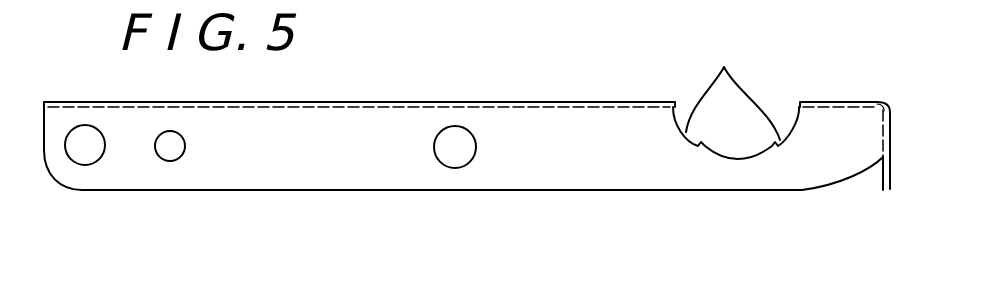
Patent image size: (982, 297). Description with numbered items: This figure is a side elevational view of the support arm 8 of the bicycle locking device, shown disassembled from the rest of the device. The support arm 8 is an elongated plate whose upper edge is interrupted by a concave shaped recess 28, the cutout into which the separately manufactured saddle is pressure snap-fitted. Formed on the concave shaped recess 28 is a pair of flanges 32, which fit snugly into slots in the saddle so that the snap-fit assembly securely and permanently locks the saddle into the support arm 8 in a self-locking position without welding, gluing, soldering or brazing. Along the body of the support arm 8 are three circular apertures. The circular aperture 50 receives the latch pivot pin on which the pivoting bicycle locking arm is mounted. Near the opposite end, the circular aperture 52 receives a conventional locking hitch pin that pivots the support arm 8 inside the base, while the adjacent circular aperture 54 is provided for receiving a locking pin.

The support arm 8 is at (550, 101).
The concave shaped recess 28 is at (787, 107).
The flanges 32 is at (724, 68).
The circular aperture 50 is at (453, 157).
The circular aperture 52 is at (86, 150).
The circular aperture 54 is at (171, 150).